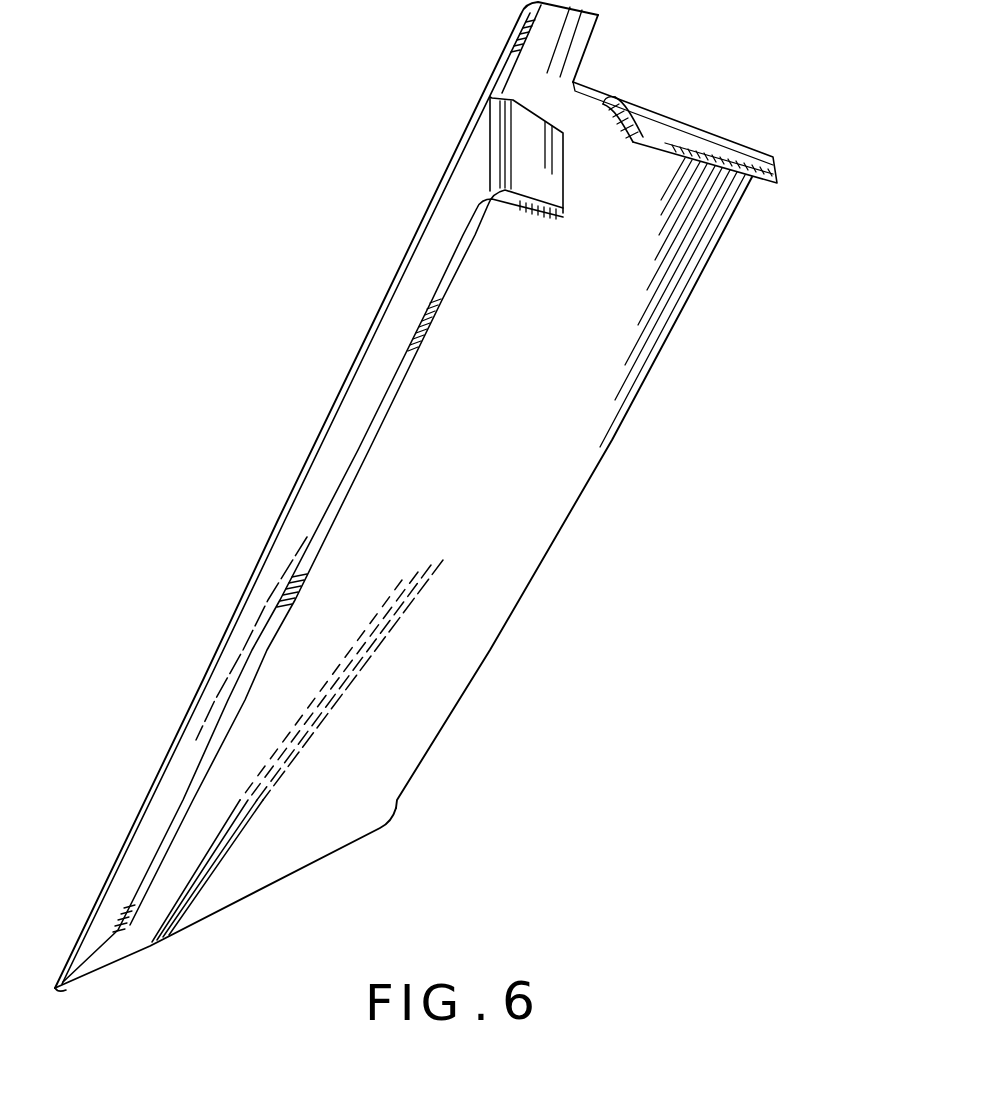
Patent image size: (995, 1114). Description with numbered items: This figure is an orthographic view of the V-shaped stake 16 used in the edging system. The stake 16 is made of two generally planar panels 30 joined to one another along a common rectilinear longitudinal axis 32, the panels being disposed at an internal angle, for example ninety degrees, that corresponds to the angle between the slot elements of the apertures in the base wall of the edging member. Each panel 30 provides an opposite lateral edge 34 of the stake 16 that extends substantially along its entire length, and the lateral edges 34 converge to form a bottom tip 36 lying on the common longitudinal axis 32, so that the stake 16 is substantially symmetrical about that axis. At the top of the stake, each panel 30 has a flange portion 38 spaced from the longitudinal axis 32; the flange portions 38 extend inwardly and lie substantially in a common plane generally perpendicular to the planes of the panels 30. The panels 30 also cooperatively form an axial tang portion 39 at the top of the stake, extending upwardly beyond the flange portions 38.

The V-shaped stake 16 is at (489, 651).
The planar panel 30 is at (363, 376).
The common rectilinear longitudinal axis 32 is at (157, 777).
The lateral edge 34 is at (356, 470).
The bottom tip 36 is at (62, 993).
The flange portion 38 is at (652, 152).
The axial tang portion 39 is at (552, 38).